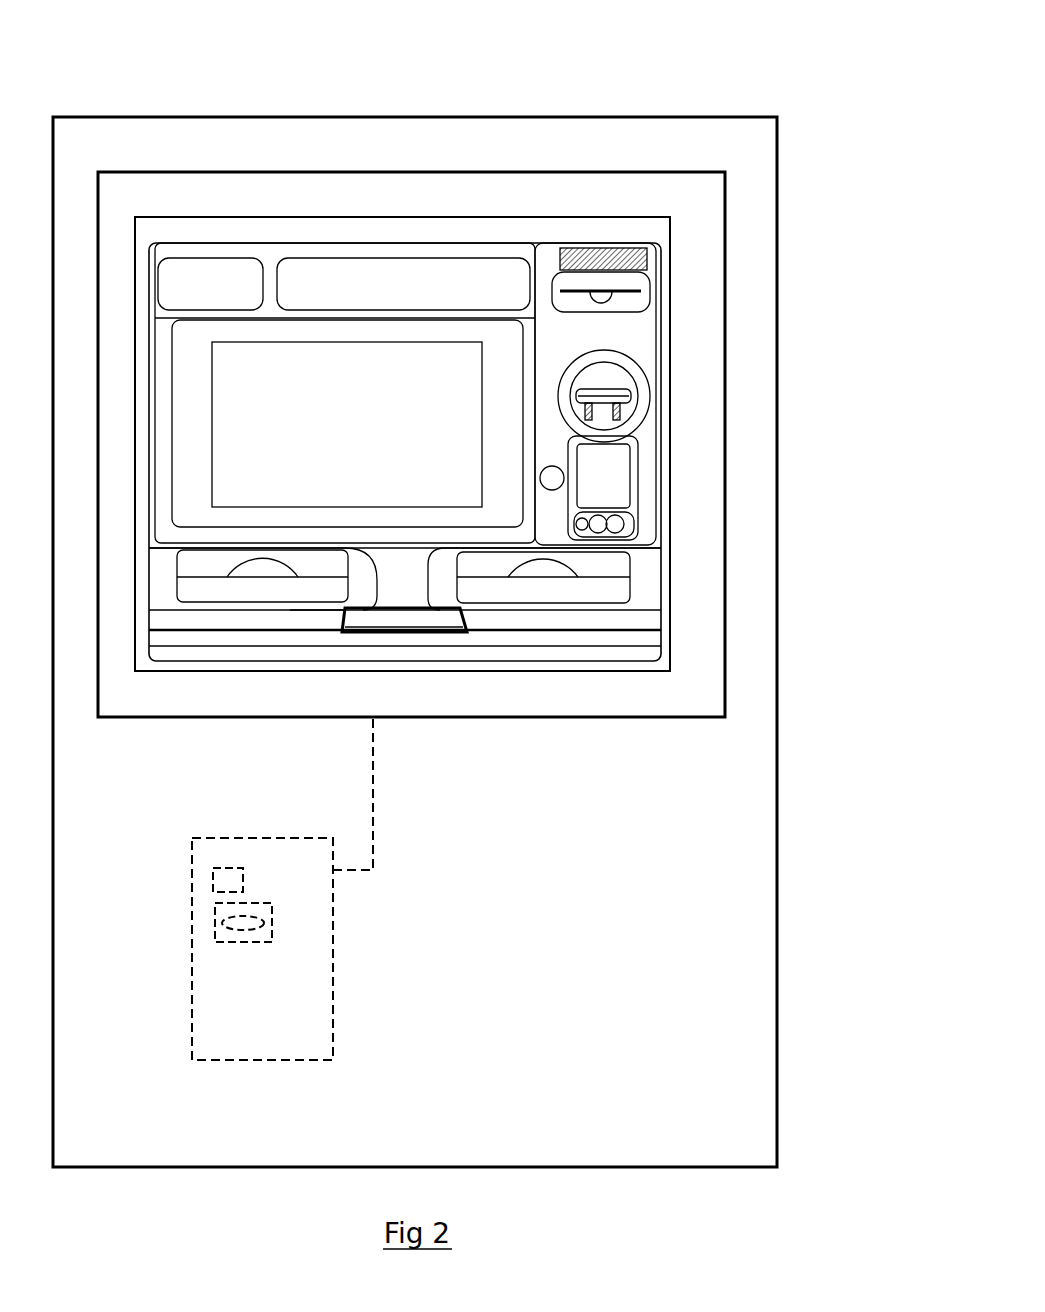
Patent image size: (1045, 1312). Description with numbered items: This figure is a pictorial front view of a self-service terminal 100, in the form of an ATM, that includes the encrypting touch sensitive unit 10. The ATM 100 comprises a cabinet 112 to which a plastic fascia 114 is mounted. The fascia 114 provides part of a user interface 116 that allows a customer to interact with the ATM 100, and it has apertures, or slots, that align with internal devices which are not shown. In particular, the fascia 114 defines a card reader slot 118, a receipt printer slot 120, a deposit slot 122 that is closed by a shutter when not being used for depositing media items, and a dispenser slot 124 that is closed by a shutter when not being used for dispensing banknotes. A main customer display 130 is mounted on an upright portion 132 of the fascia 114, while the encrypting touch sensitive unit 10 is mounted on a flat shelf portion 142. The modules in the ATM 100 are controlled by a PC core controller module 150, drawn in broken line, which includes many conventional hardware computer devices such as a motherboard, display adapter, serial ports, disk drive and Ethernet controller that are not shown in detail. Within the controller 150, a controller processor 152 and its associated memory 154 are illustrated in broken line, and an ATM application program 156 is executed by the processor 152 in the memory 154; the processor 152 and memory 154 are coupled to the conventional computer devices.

The self-service terminal 100 is at (682, 78).
The cabinet 112 is at (777, 1133).
The fascia 114 is at (268, 203).
The user interface 116 is at (612, 688).
The card reader slot 118 is at (623, 387).
The receipt printer slot 120 is at (633, 284).
The deposit slot 122 is at (260, 588).
The dispenser slot 124 is at (542, 587).
The main customer display 130 is at (352, 432).
The upright portion 132 is at (165, 387).
The flat shelf portion 142 is at (300, 624).
The encrypting touch sensitive unit 10 is at (367, 615).
The PC core controller module 150 is at (333, 932).
The controller processor 152 is at (213, 880).
The memory 154 is at (215, 922).
The ATM application program 156 is at (253, 928).